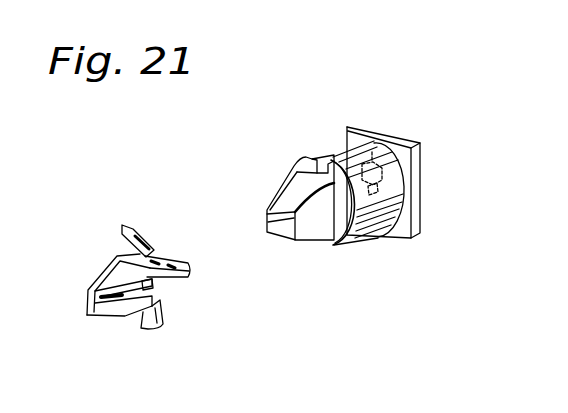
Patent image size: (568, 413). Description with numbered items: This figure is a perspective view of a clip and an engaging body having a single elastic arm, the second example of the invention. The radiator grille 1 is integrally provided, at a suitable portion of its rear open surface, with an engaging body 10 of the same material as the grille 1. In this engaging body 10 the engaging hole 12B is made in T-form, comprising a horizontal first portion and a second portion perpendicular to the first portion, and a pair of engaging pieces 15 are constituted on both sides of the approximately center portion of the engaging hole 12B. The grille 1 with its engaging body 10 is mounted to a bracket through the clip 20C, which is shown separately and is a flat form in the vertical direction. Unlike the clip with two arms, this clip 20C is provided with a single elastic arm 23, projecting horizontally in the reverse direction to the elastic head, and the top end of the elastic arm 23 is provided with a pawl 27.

The radiator grille 1 is at (418, 173).
The engaging body 10 is at (313, 249).
The engaging hole 12B is at (372, 146).
The engaging piece 15 is at (383, 200).
The clip 20C is at (137, 275).
The elastic arm 23 is at (121, 322).
The pawl 27 is at (169, 259).